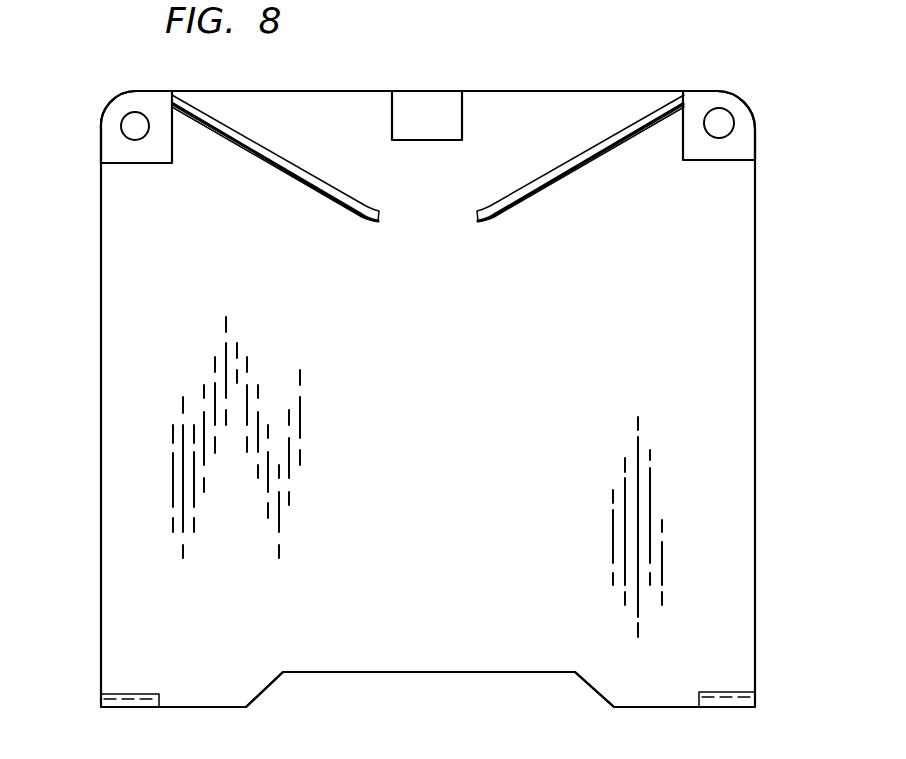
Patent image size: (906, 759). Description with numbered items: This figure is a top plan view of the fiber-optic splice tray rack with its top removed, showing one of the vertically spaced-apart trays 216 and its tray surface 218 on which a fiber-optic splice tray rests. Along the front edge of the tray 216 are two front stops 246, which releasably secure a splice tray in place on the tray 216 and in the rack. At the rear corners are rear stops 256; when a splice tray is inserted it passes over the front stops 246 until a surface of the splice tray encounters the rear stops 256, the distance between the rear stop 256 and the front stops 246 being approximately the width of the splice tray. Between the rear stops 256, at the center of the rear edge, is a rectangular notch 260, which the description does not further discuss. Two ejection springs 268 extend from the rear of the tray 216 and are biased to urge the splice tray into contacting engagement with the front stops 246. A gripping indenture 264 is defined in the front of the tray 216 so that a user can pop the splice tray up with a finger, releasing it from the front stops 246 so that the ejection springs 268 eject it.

The tray 216 is at (127, 432).
The tray surface 218 is at (443, 408).
The front stop 246 is at (101, 701).
The rear stop 256 is at (133, 164).
The notch 260 is at (430, 110).
The gripping indenture 264 is at (425, 673).
The ejection spring 268 is at (312, 192).